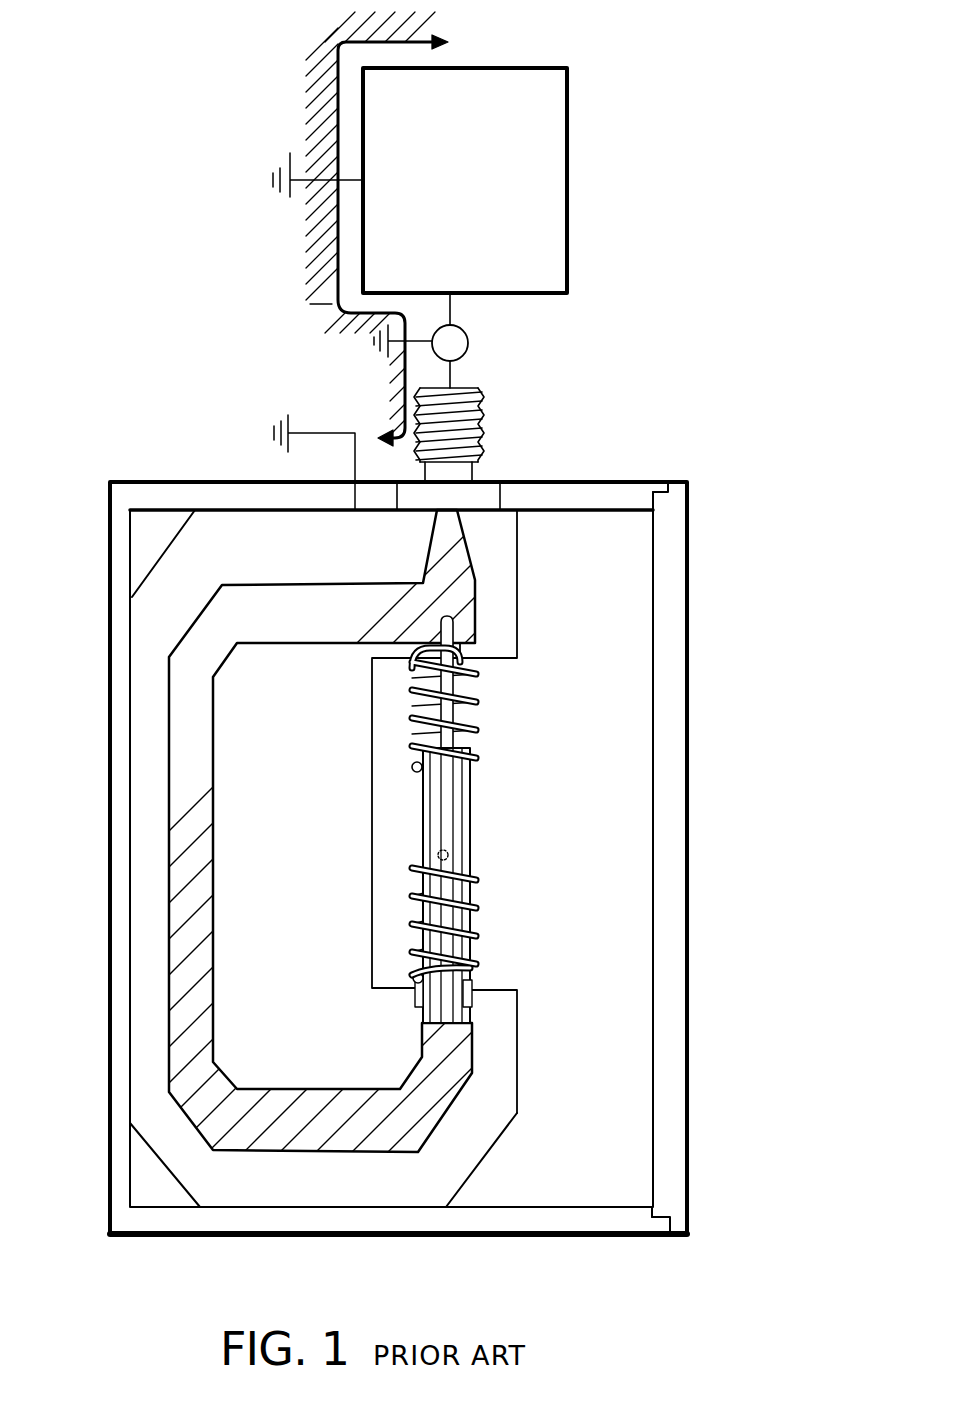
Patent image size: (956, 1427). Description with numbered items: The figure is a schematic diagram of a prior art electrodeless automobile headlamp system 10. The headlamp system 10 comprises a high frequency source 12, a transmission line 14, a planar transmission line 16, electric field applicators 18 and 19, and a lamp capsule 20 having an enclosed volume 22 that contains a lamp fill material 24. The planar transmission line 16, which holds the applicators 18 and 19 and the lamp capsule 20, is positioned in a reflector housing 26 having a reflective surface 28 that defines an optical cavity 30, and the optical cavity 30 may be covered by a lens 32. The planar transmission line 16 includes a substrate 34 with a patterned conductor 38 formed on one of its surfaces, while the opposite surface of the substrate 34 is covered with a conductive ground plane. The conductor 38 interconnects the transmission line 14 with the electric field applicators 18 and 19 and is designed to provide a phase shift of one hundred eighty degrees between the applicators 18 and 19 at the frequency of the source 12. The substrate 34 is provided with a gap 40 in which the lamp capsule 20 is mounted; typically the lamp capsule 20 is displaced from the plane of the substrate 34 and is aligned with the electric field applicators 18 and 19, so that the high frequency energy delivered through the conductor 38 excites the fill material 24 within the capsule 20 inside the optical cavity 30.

The electrodeless automobile headlamp system 10 is at (478, 656).
The high frequency source 12 is at (567, 223).
The transmission line 14 is at (452, 373).
The planar transmission line 16 is at (492, 570).
The electric field applicator 18 is at (485, 717).
The electric field applicator 19 is at (473, 940).
The lamp capsule 20 is at (468, 783).
The enclosed volume 22 is at (445, 818).
The lamp fill material 24 is at (448, 855).
The reflector housing 26 is at (535, 1238).
The reflective surface 28 is at (595, 1147).
The optical cavity 30 is at (625, 992).
The lens 32 is at (690, 1060).
The substrate 34 is at (517, 630).
The patterned conductor 38 is at (168, 772).
The gap 40 is at (385, 915).